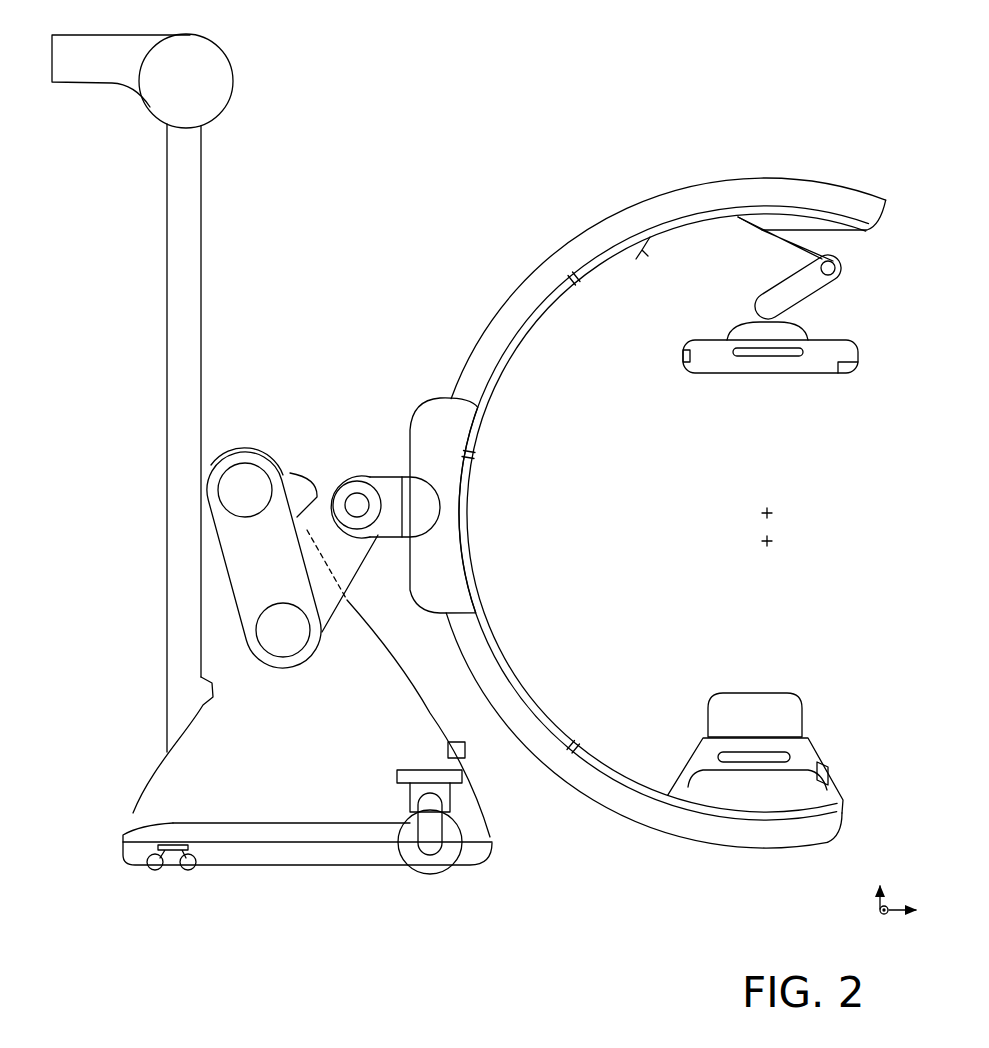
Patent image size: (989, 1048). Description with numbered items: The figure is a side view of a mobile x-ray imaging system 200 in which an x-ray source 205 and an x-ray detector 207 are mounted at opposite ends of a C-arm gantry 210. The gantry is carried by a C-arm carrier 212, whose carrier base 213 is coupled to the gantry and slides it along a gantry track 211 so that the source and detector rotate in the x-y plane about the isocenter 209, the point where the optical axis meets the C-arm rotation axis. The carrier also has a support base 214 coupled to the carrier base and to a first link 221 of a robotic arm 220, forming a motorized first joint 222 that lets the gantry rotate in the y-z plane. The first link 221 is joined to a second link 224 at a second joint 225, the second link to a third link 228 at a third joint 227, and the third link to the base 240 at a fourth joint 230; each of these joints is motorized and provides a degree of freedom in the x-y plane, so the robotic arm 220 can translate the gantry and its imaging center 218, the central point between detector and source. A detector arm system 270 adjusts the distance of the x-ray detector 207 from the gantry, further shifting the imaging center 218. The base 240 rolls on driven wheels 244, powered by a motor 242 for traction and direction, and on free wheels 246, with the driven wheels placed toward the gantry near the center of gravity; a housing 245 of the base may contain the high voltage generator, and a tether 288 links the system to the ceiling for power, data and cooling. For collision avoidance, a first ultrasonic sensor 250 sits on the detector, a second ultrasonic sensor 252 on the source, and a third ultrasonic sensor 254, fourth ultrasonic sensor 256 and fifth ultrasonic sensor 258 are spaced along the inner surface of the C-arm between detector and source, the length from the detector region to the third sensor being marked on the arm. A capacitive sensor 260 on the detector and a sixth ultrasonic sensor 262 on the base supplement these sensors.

The x-ray imaging system 200 is at (822, 50).
The x-ray source 205 is at (828, 730).
The x-ray detector 207 is at (870, 355).
The isocenter 209 is at (795, 494).
The C-arm gantry 210 is at (608, 203).
The gantry track 211 is at (508, 311).
The C-arm carrier 212 is at (439, 390).
The carrier base 213 is at (458, 428).
The support base 214 is at (427, 488).
The imaging center 218 is at (796, 532).
The robotic arm 220 is at (325, 403).
The first link 221 is at (390, 527).
The first joint 222 is at (412, 505).
The second link 224 is at (316, 492).
The second joint 225 is at (357, 498).
The third joint 227 is at (291, 636).
The third link 228 is at (222, 550).
The fourth joint 230 is at (237, 478).
The base 240 is at (322, 897).
The motor 242 is at (465, 795).
The driven wheel 244 is at (472, 829).
The housing 245 is at (128, 797).
The free wheel 246 is at (210, 863).
The first ultrasonic sensor 250 is at (847, 371).
The second ultrasonic sensor 252 is at (828, 771).
The third ultrasonic sensor 254 is at (580, 284).
The fourth ultrasonic sensor 256 is at (476, 456).
The fifth ultrasonic sensor 258 is at (578, 742).
The capacitive sensor 260 is at (686, 357).
The sixth ultrasonic sensor 262 is at (458, 748).
The detector arm system 270 is at (854, 268).
The tether 288 is at (248, 125).